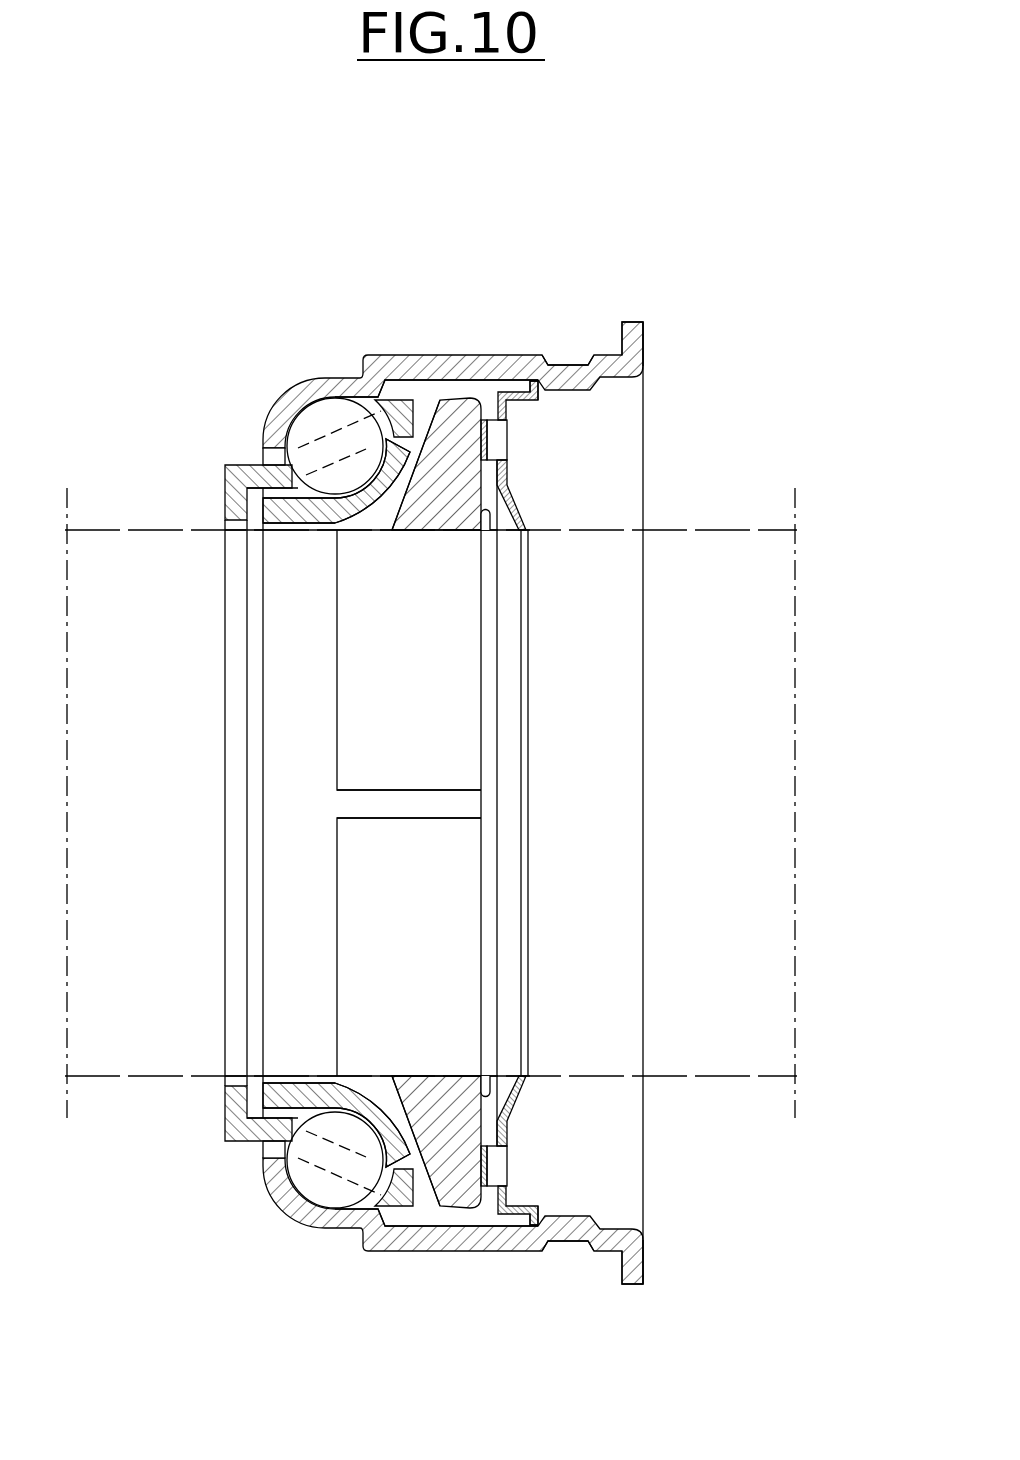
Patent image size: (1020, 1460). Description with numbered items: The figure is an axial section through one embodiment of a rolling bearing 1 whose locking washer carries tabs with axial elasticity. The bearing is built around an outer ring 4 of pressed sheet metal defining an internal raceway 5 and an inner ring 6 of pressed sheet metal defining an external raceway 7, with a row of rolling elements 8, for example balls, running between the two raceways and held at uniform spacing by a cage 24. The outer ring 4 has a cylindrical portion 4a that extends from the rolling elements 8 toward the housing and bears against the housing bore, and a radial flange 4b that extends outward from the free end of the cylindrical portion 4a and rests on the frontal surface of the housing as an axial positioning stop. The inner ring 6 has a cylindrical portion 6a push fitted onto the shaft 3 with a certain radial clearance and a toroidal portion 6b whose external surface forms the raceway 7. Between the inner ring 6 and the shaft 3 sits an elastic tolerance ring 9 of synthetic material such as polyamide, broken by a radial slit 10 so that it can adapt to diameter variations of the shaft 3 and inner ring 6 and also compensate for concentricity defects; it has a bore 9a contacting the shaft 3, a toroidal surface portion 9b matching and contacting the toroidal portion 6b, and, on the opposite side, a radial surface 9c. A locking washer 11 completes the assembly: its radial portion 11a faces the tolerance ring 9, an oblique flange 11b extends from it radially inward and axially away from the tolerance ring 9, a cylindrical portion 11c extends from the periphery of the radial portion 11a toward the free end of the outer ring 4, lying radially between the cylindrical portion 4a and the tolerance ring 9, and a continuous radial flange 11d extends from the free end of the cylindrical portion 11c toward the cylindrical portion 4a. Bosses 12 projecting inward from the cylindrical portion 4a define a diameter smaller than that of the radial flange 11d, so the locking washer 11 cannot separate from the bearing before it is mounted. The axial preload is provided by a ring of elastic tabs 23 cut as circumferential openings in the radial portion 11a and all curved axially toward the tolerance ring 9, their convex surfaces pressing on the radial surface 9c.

The rolling bearing 1 is at (656, 353).
The shaft 3 is at (115, 526).
The outer ring 4 is at (308, 378).
The cylindrical portion 4a is at (418, 379).
The radial flange 4b is at (645, 325).
The raceway 5 is at (304, 412).
The inner ring 6 is at (284, 529).
The cylindrical portion 6a is at (300, 518).
The toroidal portion 6b is at (390, 527).
The raceway 7 is at (283, 441).
The rolling elements 8 is at (302, 433).
The elastic tolerance ring 9 is at (451, 391).
The bore 9a is at (430, 705).
The toroidal surface portion 9b is at (360, 425).
The radial surface 9c is at (488, 515).
The radial slit 10 is at (450, 800).
The locking washer 11 is at (515, 442).
The radial portion 11a is at (507, 467).
The oblique flange 11b is at (520, 508).
The cylindrical portion 11c is at (529, 379).
The radial flange 11d is at (537, 390).
The bosses 12 is at (577, 373).
The elastic tabs 23 is at (490, 417).
The cage 24 is at (225, 490).